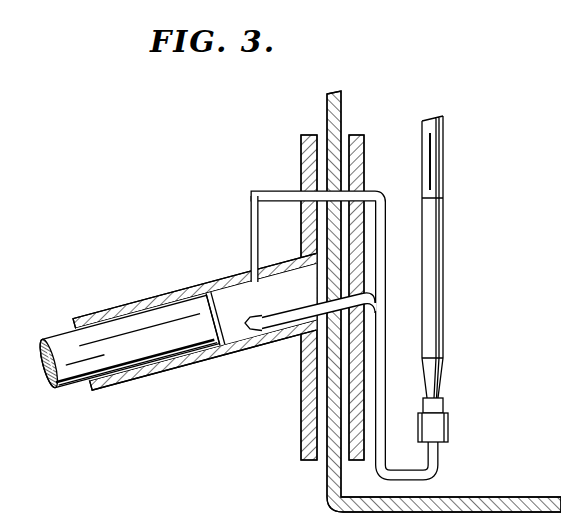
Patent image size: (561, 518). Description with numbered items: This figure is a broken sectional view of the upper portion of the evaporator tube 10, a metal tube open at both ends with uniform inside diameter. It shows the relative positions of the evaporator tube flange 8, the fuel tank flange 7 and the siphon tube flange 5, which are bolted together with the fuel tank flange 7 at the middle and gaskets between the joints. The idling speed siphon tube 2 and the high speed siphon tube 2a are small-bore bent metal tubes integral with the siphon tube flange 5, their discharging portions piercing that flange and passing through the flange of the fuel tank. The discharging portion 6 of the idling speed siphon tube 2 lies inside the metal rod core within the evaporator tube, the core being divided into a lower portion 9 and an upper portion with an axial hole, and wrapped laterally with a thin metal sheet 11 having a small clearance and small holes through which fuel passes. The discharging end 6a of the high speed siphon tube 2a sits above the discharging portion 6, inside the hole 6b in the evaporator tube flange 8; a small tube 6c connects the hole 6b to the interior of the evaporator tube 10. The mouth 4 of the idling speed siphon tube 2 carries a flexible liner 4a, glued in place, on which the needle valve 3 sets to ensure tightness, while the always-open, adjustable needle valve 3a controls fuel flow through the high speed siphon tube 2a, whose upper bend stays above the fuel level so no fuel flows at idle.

The idling speed siphon tube 2 is at (387, 338).
The high speed siphon tube 2a is at (387, 238).
The needle valve 3 is at (443, 219).
The needle valve 3a is at (441, 142).
The mouth 4 is at (448, 426).
The liner 4a is at (444, 406).
The siphon tube flange 5 is at (363, 156).
The discharging portion 6 is at (282, 324).
The discharging end 6a is at (363, 189).
The hole 6b is at (303, 191).
The small tube 6c is at (250, 243).
The fuel tank flange 7 is at (339, 120).
The evaporator tube flange 8 is at (300, 147).
The lower portion of metal rod core 9 is at (140, 361).
The evaporator tube 10 is at (193, 371).
The thin metal sheet 11 is at (63, 330).